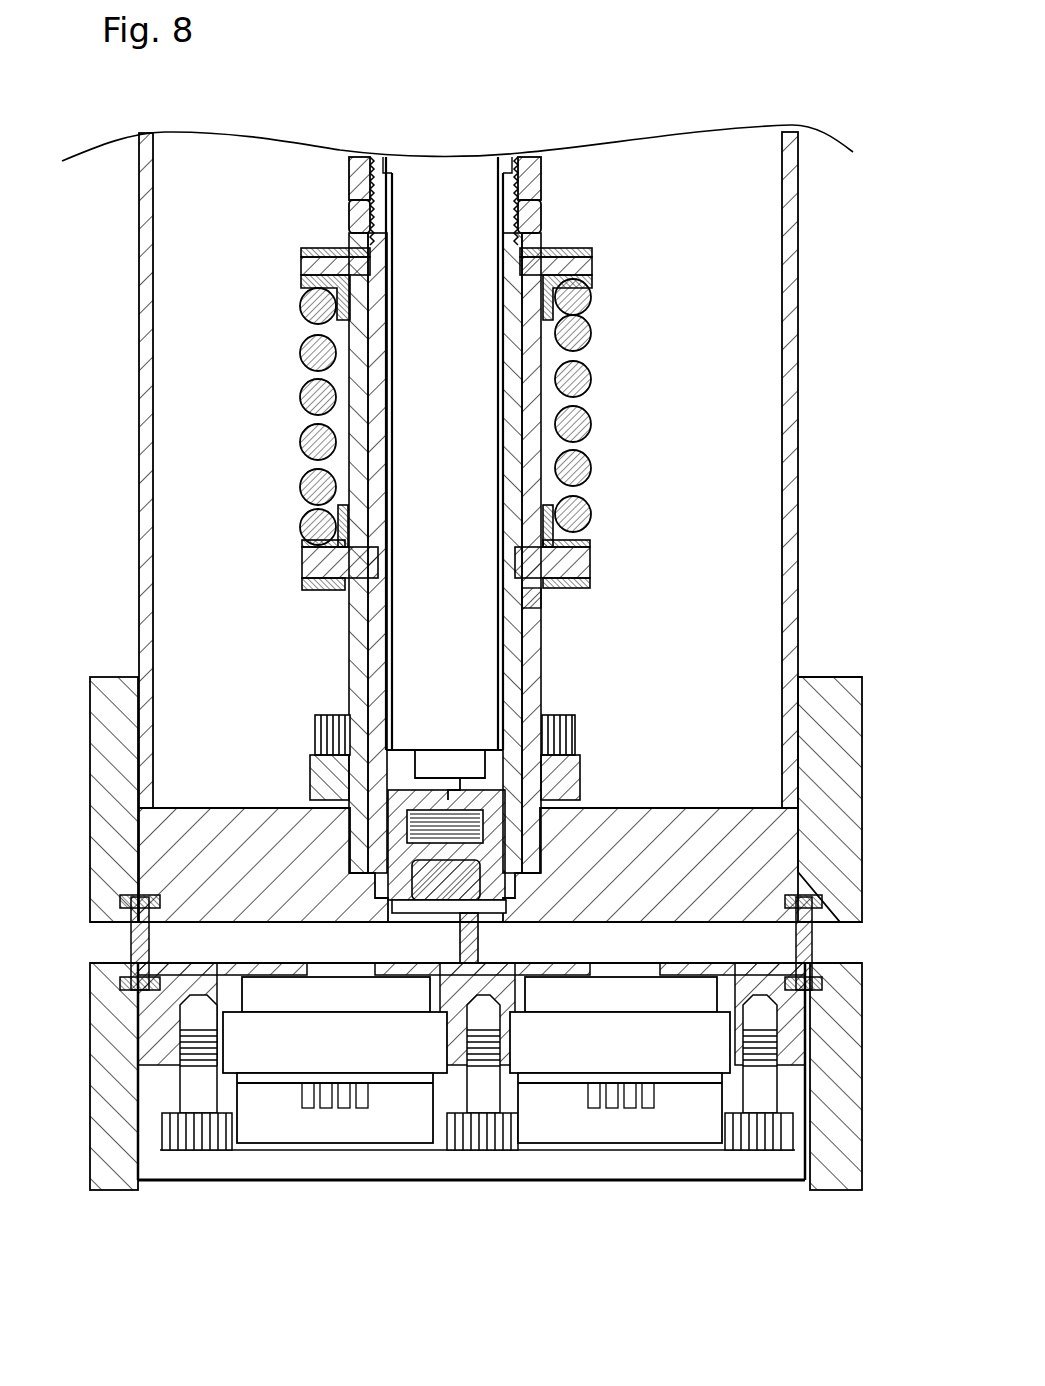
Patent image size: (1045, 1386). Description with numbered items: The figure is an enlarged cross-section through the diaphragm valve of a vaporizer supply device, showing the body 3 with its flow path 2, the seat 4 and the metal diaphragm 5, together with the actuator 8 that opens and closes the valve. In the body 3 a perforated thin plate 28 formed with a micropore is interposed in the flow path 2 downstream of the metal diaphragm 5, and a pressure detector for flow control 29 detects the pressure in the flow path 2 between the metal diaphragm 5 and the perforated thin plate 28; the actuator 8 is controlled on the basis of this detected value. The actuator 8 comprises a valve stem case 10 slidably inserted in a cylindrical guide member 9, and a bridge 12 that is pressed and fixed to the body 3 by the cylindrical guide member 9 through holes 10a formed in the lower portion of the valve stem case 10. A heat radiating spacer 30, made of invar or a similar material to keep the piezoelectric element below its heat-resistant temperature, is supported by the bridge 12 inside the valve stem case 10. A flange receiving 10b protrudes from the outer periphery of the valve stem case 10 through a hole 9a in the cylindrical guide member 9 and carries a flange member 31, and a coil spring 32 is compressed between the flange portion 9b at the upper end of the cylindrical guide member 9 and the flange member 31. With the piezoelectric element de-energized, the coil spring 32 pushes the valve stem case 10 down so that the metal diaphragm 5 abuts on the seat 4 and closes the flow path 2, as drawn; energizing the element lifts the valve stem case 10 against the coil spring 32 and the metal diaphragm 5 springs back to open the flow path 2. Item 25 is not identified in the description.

The flow path 2 is at (213, 950).
The body 3 is at (192, 808).
The seat 4 is at (436, 912).
The metal diaphragm 5 is at (412, 903).
The actuator 8 is at (347, 216).
The cylindrical guide member 9 is at (540, 690).
The hole 9a is at (532, 597).
The flange portion 9b is at (590, 266).
The valve stem case 10 is at (510, 657).
The holes 10a is at (330, 790).
The flange receiving 10b is at (592, 556).
The bridge 12 is at (578, 778).
The motor 25 is at (275, 1068).
The perforated thin plate 28 is at (815, 940).
The pressure detector for flow control 29 is at (680, 1062).
The heat radiating spacer 30 is at (420, 637).
The flange member 31 is at (592, 540).
The coil spring 32 is at (592, 378).